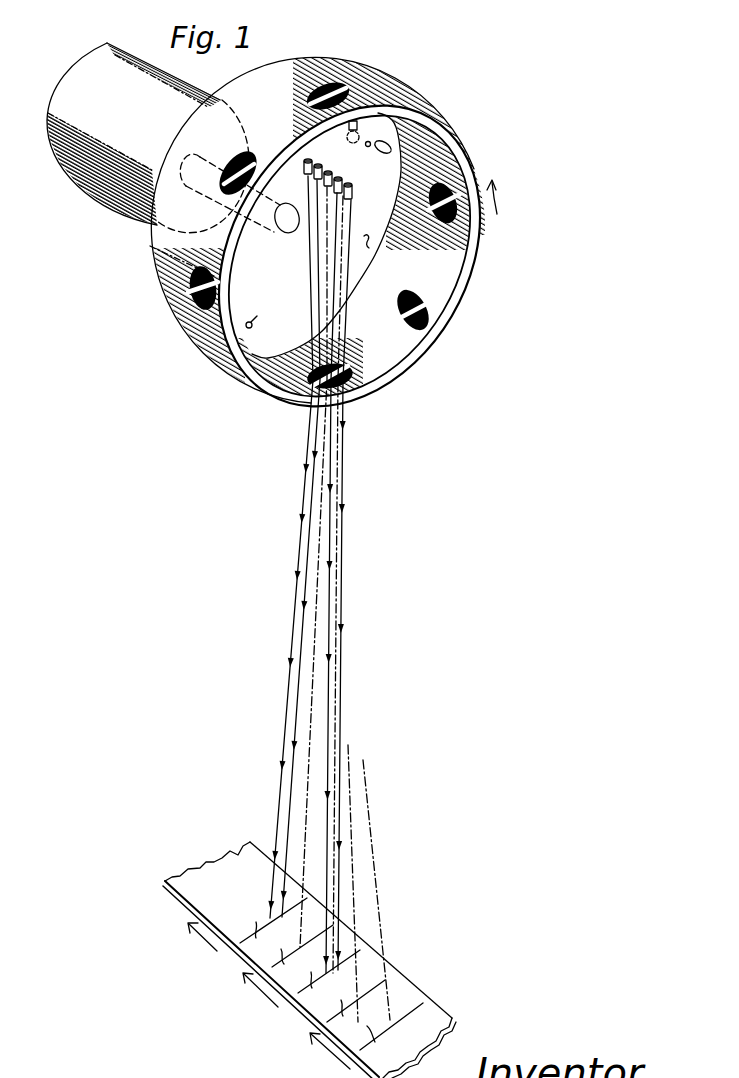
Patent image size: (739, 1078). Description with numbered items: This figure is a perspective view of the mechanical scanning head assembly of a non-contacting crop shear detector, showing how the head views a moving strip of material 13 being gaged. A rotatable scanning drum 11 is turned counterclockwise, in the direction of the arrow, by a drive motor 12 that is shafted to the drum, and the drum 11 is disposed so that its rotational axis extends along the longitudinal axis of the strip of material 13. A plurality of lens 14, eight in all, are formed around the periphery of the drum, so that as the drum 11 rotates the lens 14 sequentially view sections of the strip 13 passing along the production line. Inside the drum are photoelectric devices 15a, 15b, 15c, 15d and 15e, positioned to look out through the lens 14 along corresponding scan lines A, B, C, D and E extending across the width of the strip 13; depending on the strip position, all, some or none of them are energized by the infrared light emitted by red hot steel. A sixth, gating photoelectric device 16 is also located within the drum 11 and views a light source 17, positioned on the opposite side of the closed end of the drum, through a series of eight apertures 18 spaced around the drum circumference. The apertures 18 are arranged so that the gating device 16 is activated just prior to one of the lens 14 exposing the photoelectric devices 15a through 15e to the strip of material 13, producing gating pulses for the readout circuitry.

The rotatable scanning drum 11 is at (418, 338).
The drive motor 12 is at (101, 155).
The strip of material 13 is at (242, 855).
The lens 14 is at (412, 298).
The photoelectric device 15a is at (352, 190).
The photoelectric device 15b is at (342, 182).
The photoelectric device 15c is at (332, 174).
The photoelectric device 15d is at (318, 166).
The photoelectric device 15e is at (305, 170).
The gating photoelectric device 16 is at (384, 143).
The light source 17 is at (362, 132).
The apertures 18 is at (310, 281).